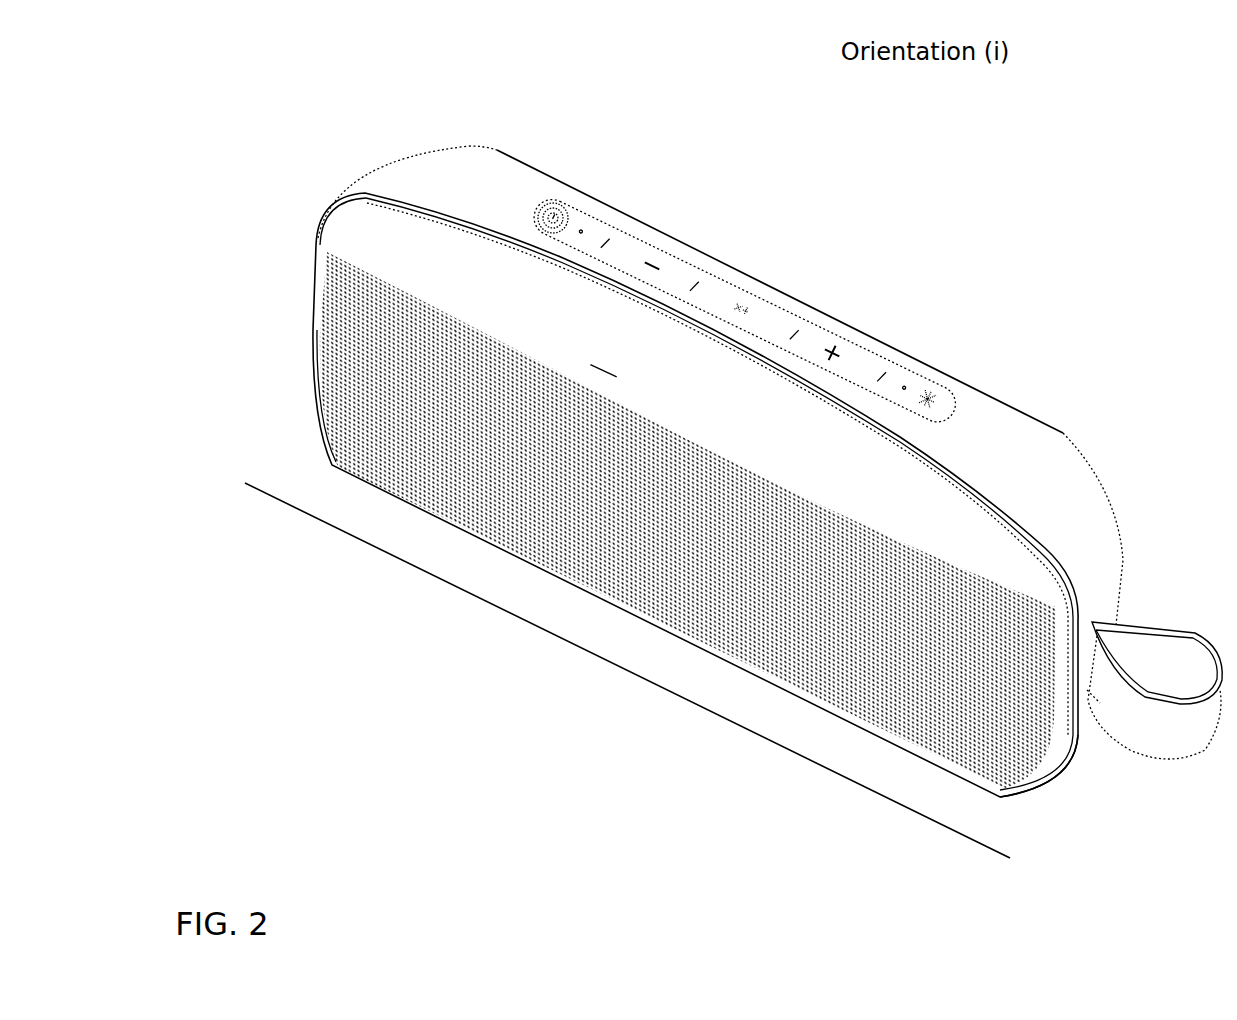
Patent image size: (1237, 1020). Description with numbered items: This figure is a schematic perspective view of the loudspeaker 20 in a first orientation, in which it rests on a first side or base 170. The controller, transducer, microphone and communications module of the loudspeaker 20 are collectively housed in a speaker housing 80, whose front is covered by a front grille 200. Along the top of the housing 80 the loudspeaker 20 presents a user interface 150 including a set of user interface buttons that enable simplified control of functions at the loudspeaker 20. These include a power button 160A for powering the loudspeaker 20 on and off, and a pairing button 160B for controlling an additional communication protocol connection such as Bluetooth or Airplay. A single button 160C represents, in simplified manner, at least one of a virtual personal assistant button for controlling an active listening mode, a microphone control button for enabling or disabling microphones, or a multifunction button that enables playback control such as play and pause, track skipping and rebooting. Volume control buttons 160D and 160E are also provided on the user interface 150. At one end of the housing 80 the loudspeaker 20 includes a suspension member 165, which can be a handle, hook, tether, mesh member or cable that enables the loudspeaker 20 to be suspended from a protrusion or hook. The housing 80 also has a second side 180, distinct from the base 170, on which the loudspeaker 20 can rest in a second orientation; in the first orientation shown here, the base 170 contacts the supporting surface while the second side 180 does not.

The loudspeaker 20 is at (350, 80).
The speaker housing 80 is at (318, 225).
The user interface 150 is at (908, 308).
The power button 160A is at (535, 200).
The pairing button 160B is at (938, 388).
The single button 160C is at (748, 295).
The volume control button 160D is at (840, 335).
The volume control button 160E is at (660, 250).
The suspension member 165 is at (1138, 590).
The base 170 is at (1068, 775).
The second side 180 is at (1063, 415).
The front grille 200 is at (310, 400).